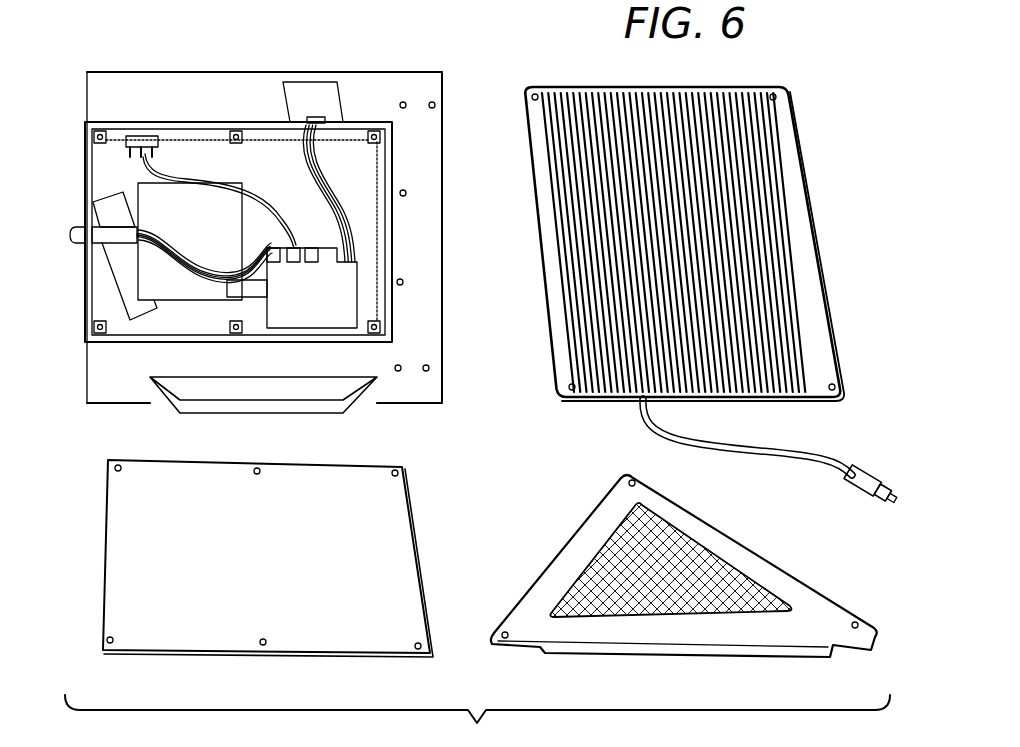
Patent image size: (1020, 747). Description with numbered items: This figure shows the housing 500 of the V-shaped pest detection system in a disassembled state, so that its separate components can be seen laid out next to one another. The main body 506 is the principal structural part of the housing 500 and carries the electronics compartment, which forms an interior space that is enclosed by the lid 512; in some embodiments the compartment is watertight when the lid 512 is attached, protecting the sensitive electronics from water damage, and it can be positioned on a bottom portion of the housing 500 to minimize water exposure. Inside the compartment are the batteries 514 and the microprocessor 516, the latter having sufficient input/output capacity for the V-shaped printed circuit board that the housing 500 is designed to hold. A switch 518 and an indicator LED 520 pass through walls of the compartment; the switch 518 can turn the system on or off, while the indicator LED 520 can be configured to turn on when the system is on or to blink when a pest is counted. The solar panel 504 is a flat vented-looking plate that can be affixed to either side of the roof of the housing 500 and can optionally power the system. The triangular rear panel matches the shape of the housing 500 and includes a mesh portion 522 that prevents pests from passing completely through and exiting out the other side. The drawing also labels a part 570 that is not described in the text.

The housing 500 is at (822, 93).
The solar panel 504 is at (778, 217).
The main body 506 is at (256, 103).
The lid 512 is at (380, 523).
The batteries 514 is at (147, 190).
The microprocessor 516 is at (343, 298).
The switch 518 is at (141, 131).
The indicator LED 520 is at (75, 227).
The mesh portion 522 is at (703, 560).
The bracket 570 is at (100, 285).